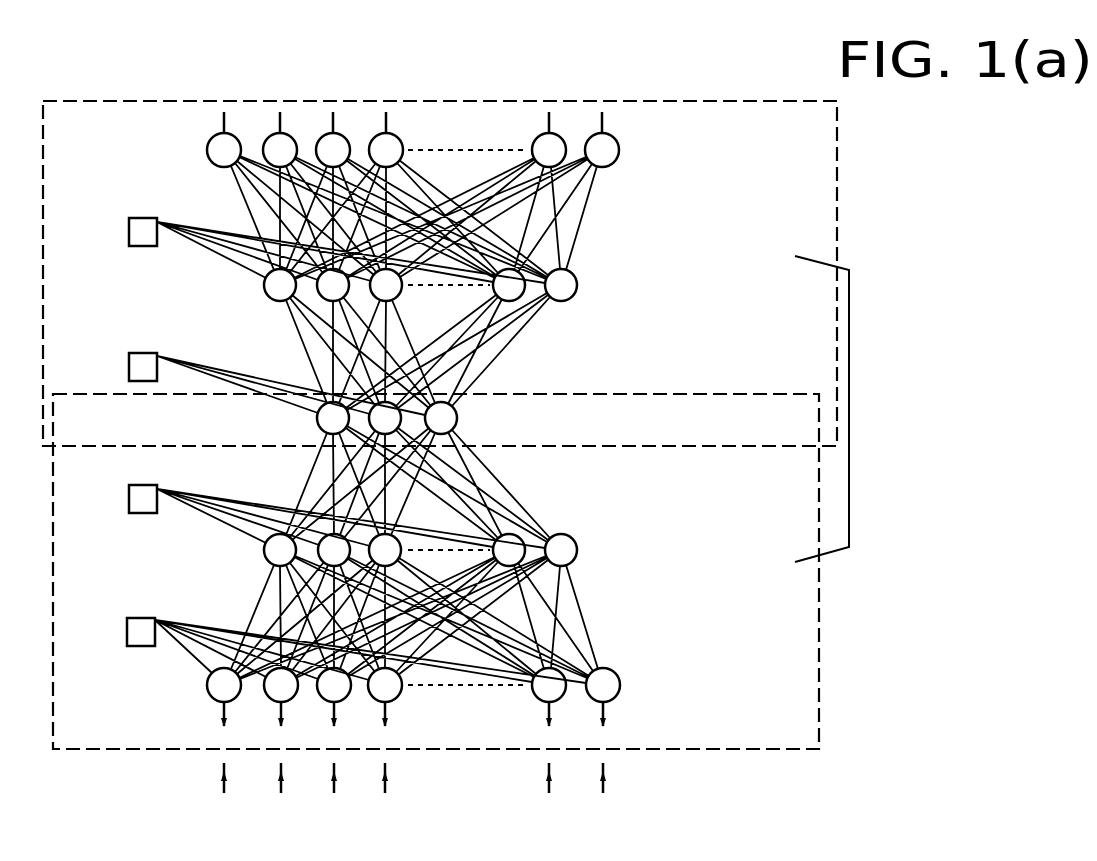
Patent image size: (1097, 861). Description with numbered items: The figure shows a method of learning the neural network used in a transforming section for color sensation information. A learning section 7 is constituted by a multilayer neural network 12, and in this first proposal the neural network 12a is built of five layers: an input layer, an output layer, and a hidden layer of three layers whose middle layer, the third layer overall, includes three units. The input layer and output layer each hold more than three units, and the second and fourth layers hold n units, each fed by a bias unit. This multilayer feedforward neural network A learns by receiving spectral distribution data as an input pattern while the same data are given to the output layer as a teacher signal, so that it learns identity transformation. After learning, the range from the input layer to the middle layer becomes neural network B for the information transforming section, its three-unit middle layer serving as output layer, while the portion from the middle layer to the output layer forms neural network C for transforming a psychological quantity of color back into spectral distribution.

The neural network B is at (838, 163).
The neural network C is at (819, 709).
The multilayer neural network 12 is at (532, 452).
The neural network 12a is at (532, 452).
The learning section 7 is at (920, 372).
The neural network A is at (516, 452).